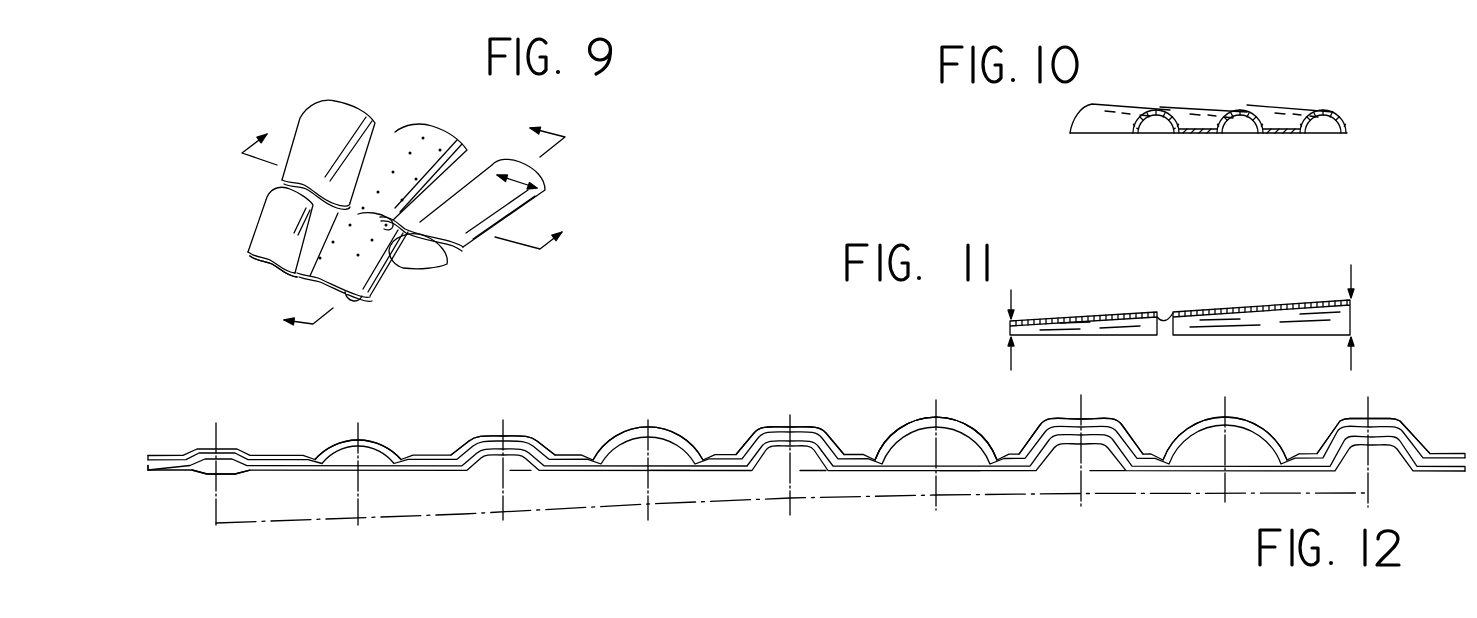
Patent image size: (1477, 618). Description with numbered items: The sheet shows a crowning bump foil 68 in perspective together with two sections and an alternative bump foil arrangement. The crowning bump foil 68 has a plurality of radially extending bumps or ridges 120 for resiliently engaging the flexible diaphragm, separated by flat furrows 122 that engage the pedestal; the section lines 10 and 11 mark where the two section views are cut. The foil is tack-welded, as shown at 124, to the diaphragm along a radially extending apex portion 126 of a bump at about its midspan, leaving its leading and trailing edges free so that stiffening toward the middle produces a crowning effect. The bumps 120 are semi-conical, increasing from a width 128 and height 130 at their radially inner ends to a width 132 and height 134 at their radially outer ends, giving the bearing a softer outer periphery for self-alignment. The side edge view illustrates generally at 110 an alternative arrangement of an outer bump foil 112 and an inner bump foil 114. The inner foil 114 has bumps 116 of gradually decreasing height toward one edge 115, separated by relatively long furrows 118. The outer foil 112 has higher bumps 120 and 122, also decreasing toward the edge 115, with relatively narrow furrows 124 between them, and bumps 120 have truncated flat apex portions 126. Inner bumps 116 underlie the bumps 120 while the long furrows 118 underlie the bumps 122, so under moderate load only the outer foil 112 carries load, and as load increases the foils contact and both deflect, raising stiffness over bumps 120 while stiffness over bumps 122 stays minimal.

In FIG. 9, the section lines 10— 10 is at (384, 207).
In FIG. 9, the section lines 11— 11 is at (435, 239).
In FIG. 9, the crowning bump foil 68 is at (327, 140).
In FIG. 10, the crowning bump foil 68 is at (1143, 96).
In FIG. 11, the crowning bump foil 68 is at (1148, 290).
In FIG. 12, the alternative arrangement of outer and inner bump foils 110 is at (806, 445).
In FIG. 12, the outer bump foil 112 is at (936, 414).
In FIG. 12, the inner bump foil 114 is at (1108, 505).
In FIG. 12, the edge 115 is at (167, 439).
In FIG. 12, the inner foil bumps 116 is at (507, 516).
In FIG. 12, the furrows 118 is at (815, 505).
In FIG. 9, the bumps 120 is at (342, 182).
In FIG. 10, the bumps 120 is at (1253, 91).
In FIG. 11, the bumps 120 is at (1261, 279).
In FIG. 12, the bumps 120 is at (942, 416).
In FIG. 9, the bumps / furrows 122 is at (462, 158).
In FIG. 10, the bumps / furrows 122 is at (1208, 151).
In FIG. 12, the bumps / furrows 122 is at (941, 419).
In FIG. 9, the furrows / tack weld 124 is at (272, 275).
In FIG. 12, the furrows / tack weld 124 is at (872, 425).
In FIG. 9, the flat apex portion 126 is at (435, 258).
In FIG. 12, the flat apex portion 126 is at (503, 422).
In FIG. 9, the width at radially inner end 128 is at (360, 271).
In FIG. 11, the height at radially inner end 130 is at (1040, 323).
In FIG. 9, the width at radially outer end 132 is at (570, 182).
In FIG. 11, the height at radially outer end 134 is at (1377, 297).